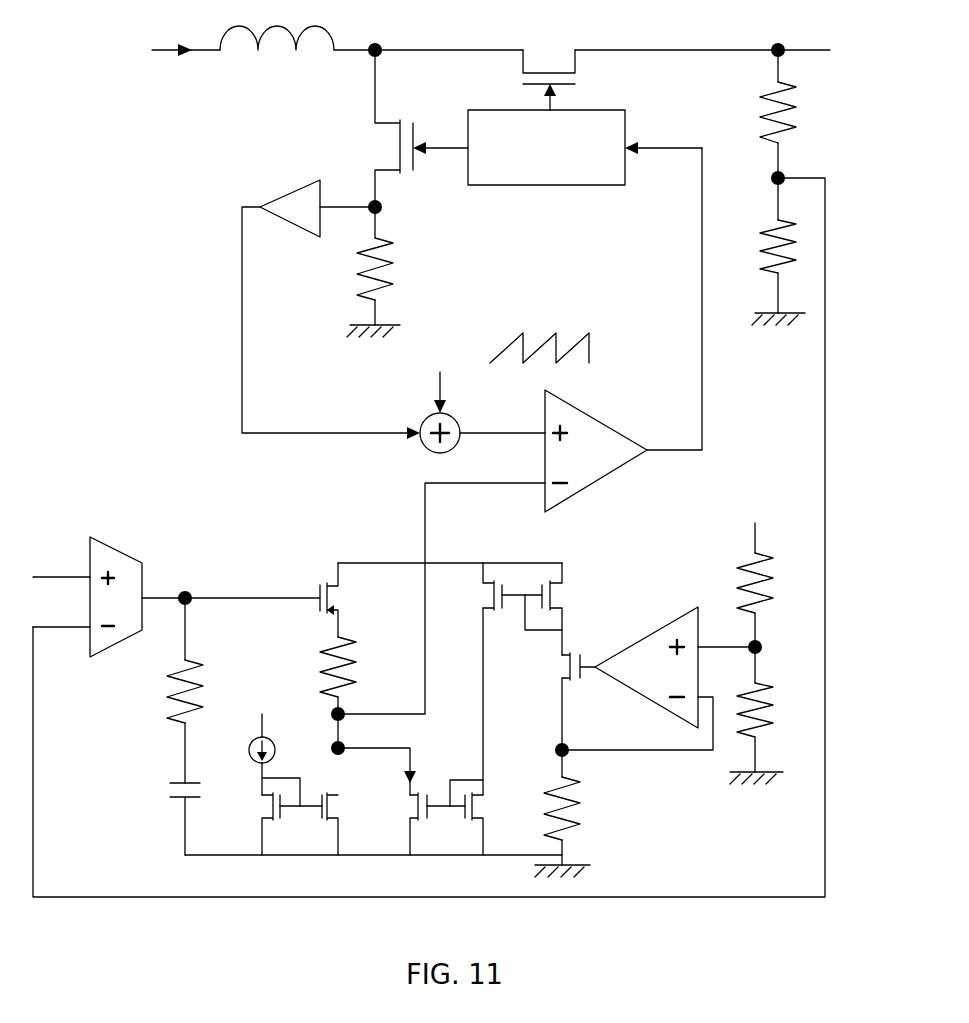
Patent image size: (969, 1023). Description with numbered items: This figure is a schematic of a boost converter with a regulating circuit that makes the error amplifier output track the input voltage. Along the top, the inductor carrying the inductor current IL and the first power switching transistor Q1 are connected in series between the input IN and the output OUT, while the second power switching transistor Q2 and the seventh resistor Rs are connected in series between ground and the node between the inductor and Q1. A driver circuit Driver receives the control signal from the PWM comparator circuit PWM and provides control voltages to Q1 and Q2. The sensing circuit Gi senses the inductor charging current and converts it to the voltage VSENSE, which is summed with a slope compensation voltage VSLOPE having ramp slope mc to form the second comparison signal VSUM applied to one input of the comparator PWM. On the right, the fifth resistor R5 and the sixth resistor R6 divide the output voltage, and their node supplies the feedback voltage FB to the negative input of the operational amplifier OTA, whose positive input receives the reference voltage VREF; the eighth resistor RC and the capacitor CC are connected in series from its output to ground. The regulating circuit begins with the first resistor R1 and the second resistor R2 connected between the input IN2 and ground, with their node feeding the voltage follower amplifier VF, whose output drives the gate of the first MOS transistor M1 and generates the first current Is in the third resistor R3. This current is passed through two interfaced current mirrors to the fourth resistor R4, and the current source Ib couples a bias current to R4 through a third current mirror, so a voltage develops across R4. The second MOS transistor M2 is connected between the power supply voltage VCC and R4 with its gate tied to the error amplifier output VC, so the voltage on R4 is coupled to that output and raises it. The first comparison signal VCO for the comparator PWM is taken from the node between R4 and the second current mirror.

The input IN is at (174, 51).
The inductor current / inductor IL is at (262, 38).
The first power switching transistor Q1 is at (549, 70).
The second power switching transistor Q2 is at (409, 128).
The output OUT is at (856, 51).
The fifth resistor R5 is at (796, 117).
The sixth resistor R6 is at (769, 251).
The driver circuit Driver is at (585, 147).
The sensing circuit Gi is at (317, 208).
The seventh resistor Rs is at (387, 272).
The slope compensation voltage VSLOPE is at (422, 382).
The slope compensation ramp mc is at (500, 340).
The current sense voltage VSENSE is at (353, 423).
The summed voltage VSUM is at (502, 422).
The PWM comparator circuit PWM is at (596, 451).
The first comparison signal voltage VCO is at (441, 598).
The operational amplifier OTA is at (205, 597).
The reference voltage signal VREF is at (61, 568).
The feedback voltage FB is at (61, 618).
The error amplifier output voltage VC is at (233, 586).
The eighth resistor RC is at (166, 690).
The capacitor CC is at (165, 819).
The second MOS transistor M2 is at (318, 600).
The power supply voltage VCC is at (450, 554).
The fourth resistor R4 is at (353, 692).
The first current Is is at (383, 771).
The current source Ib is at (274, 760).
The first MOS transistor M1 is at (561, 701).
The voltage follower amplifier VF is at (658, 678).
The third resistor R3 is at (574, 813).
The input voltage sense IN2 is at (753, 514).
The first resistor R1 is at (773, 585).
The second resistor R2 is at (770, 715).